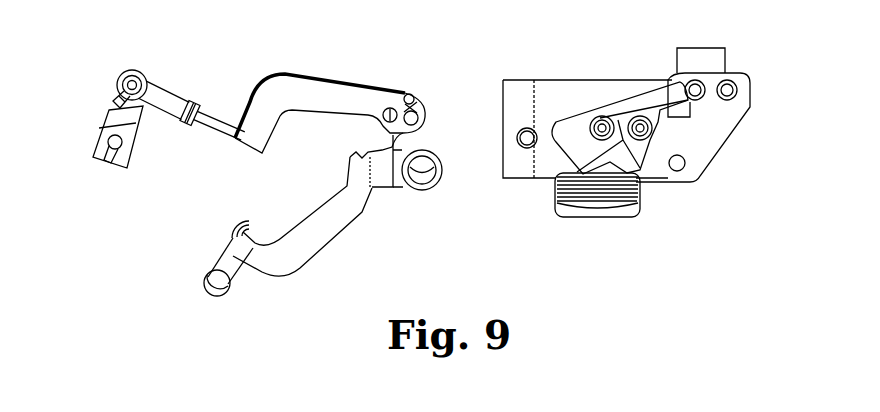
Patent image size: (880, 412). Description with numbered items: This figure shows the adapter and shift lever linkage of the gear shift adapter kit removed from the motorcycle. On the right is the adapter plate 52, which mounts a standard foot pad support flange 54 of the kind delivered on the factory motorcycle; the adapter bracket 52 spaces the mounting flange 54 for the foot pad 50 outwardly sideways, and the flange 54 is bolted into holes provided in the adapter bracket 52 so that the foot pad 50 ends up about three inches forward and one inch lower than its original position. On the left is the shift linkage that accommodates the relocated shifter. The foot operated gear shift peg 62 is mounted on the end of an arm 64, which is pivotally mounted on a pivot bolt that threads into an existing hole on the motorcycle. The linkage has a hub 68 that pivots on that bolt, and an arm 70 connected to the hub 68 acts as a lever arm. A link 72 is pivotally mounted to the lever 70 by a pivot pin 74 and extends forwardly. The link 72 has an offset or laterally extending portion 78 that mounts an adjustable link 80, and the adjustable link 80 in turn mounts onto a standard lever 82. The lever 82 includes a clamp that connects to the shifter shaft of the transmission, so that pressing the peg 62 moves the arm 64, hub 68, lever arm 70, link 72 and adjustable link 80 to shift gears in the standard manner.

The foot pad 50 is at (607, 214).
The adapter plate 52 is at (562, 94).
The foot pad support flange 54 is at (655, 108).
The gear shift peg 62 is at (223, 257).
The arm 64 is at (325, 232).
The hub 68 is at (412, 192).
The arm 70 is at (425, 137).
The link 72 is at (335, 103).
The pivot pin 74 is at (406, 91).
The offset portion 78 is at (235, 133).
The adjustable link 80 is at (204, 116).
The lever 82 is at (120, 112).